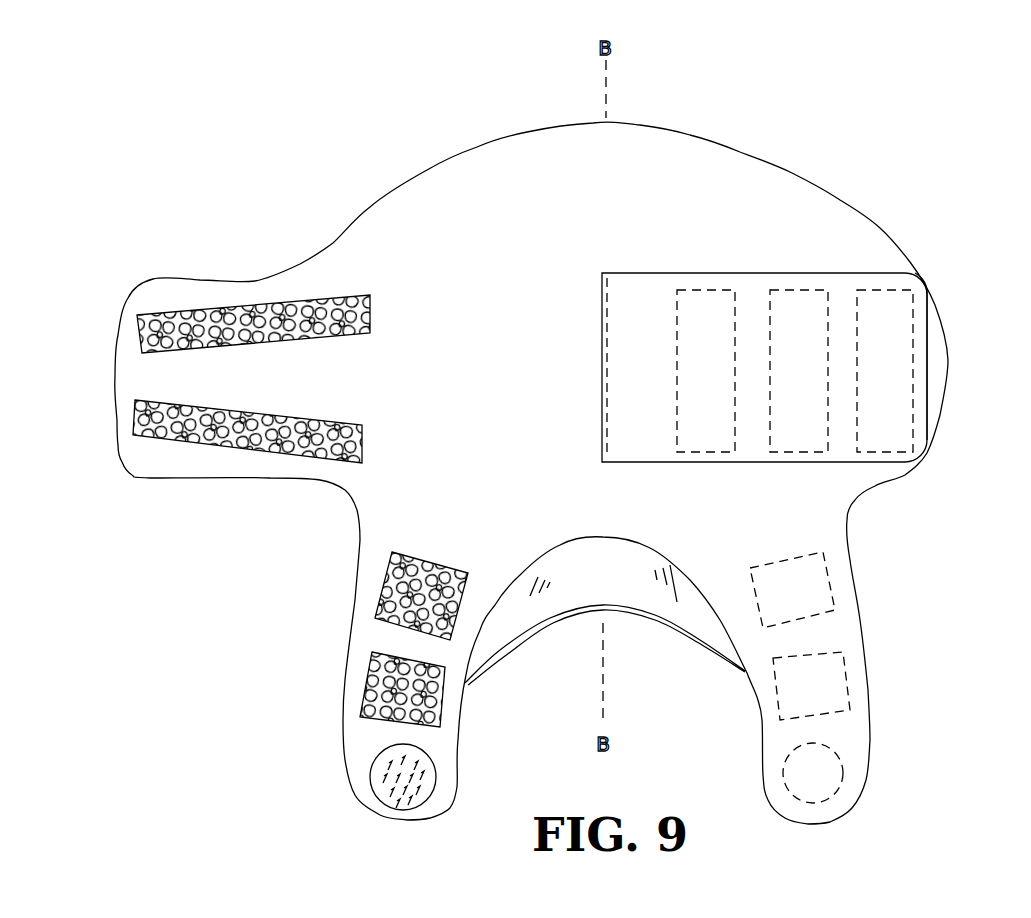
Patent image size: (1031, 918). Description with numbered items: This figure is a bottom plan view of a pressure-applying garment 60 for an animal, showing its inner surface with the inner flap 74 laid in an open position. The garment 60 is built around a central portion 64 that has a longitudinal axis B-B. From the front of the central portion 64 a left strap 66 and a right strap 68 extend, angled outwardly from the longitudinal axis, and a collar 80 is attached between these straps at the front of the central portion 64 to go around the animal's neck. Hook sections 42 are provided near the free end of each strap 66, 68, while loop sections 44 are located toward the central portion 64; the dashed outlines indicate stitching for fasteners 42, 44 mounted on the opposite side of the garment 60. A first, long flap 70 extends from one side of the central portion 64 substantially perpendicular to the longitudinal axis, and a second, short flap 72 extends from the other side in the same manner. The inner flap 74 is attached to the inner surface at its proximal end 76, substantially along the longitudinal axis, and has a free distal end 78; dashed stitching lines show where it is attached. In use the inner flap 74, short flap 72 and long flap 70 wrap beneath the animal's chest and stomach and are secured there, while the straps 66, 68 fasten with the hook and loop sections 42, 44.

The pressure-applying garment 60 is at (910, 174).
The central portion 64 is at (683, 148).
The long flap 70 is at (122, 375).
The short flap 72 is at (937, 377).
The left strap 66 is at (355, 735).
The right strap 68 is at (857, 728).
The collar 80 is at (707, 620).
The inner flap 74 is at (757, 283).
The proximal end 76 is at (600, 345).
The distal end 78 is at (920, 330).
The loop sections 44 is at (337, 300).
The hook sections 42 is at (378, 783).